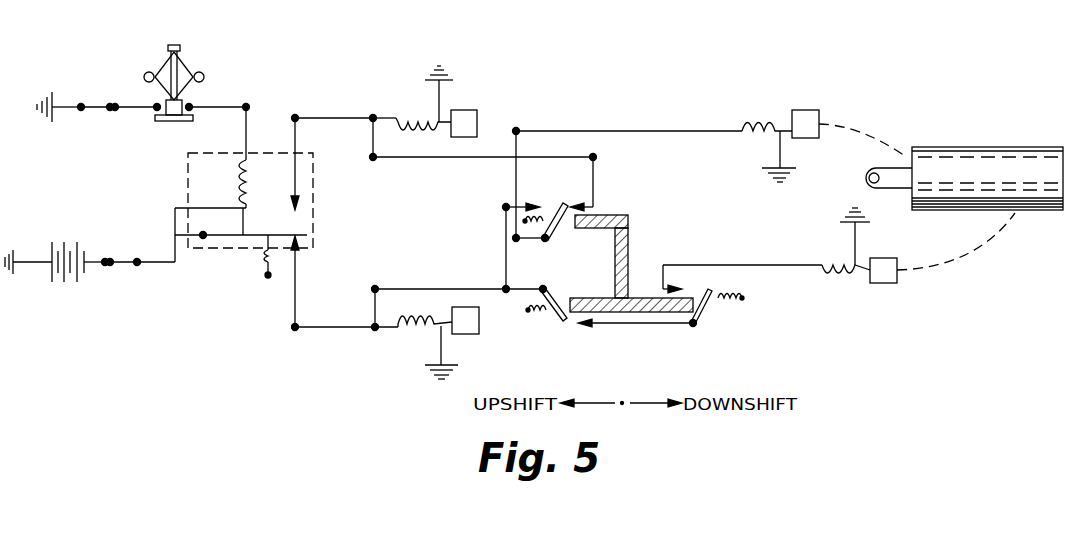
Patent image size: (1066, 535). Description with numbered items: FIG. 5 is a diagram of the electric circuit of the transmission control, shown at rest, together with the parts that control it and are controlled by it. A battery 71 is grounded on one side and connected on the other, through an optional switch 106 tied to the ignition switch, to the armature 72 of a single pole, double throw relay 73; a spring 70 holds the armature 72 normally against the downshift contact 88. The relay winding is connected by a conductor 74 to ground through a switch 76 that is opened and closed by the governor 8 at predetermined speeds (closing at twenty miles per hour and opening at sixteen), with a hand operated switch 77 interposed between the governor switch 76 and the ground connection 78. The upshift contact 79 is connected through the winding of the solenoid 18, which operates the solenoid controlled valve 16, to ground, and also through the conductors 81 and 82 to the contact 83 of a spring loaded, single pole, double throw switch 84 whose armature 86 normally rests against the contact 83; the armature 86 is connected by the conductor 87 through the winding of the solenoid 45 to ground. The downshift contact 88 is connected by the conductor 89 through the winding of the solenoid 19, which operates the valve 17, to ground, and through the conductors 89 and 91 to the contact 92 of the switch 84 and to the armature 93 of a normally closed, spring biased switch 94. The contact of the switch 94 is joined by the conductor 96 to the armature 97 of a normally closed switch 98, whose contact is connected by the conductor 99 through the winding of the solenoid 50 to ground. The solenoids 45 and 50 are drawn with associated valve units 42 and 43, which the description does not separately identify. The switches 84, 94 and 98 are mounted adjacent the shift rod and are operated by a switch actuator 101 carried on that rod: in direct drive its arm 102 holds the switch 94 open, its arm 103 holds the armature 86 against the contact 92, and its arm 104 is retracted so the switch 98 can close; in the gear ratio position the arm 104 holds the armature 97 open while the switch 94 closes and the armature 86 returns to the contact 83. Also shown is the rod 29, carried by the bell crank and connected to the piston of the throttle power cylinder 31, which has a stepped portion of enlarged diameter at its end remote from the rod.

The governor 8 is at (187, 68).
The solenoid controlled valve 16 is at (478, 112).
The solenoid controlled valve 17 is at (470, 334).
The solenoid 18 is at (410, 118).
The solenoid 19 is at (420, 326).
The rod 29 is at (862, 176).
The throttle power cylinder 31 is at (988, 152).
The valve 42 is at (812, 110).
The valve 43 is at (892, 283).
The solenoid 45 is at (766, 117).
The solenoid 50 is at (848, 274).
The spring 70 is at (272, 262).
The battery 71 is at (67, 287).
The armature 72 is at (233, 237).
The relay 73 is at (210, 255).
The conductor 74 is at (245, 138).
The switch 76 is at (157, 113).
The hand operated switch 77 is at (92, 105).
The ground connection 78 is at (62, 110).
The upshift contact 79 is at (298, 210).
The conductor 81 is at (333, 116).
The conductor 82 is at (422, 158).
The contact 83 is at (570, 206).
The switch 84 is at (540, 232).
The armature 86 is at (566, 202).
The conductor 87 is at (681, 130).
The downshift contact 88 is at (300, 262).
The conductor 89 is at (333, 329).
The conductor 91 is at (428, 287).
The contact 92 is at (541, 205).
The armature 93 is at (547, 294).
The switch 94 is at (553, 328).
The conductor 96 is at (630, 325).
The armature 97 is at (700, 307).
The switch 98 is at (684, 290).
The conductor 99 is at (748, 263).
The switch actuator 101 is at (630, 243).
The arm 102 is at (590, 298).
The arm 103 is at (612, 216).
The arm 104 is at (660, 314).
The switch 106 is at (120, 265).